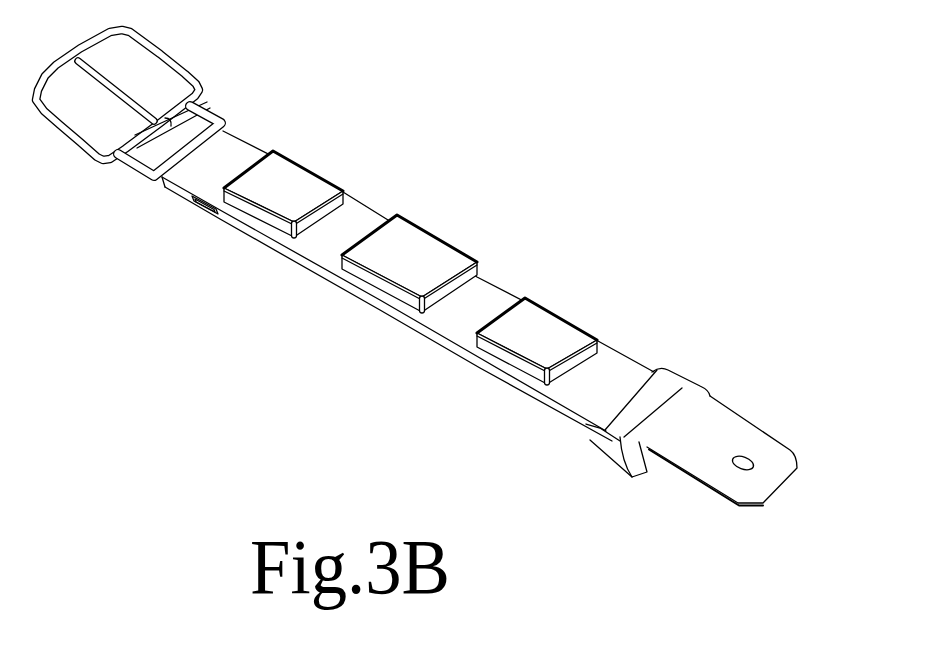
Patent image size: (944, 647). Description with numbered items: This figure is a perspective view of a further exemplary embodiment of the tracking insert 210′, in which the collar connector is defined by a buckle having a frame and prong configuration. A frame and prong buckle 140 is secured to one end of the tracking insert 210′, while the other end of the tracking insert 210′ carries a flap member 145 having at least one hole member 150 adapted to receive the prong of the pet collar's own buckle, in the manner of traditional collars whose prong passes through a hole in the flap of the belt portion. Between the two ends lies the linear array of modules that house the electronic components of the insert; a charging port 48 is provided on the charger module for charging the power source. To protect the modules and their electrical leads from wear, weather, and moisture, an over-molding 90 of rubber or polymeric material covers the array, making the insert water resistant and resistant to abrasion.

The charging port 48 is at (205, 210).
The over-molding 90 is at (610, 372).
The frame and prong buckle 140 is at (163, 58).
The flap member 145 is at (737, 438).
The hole member 150 is at (741, 463).
The tracking insert 210′ is at (513, 258).